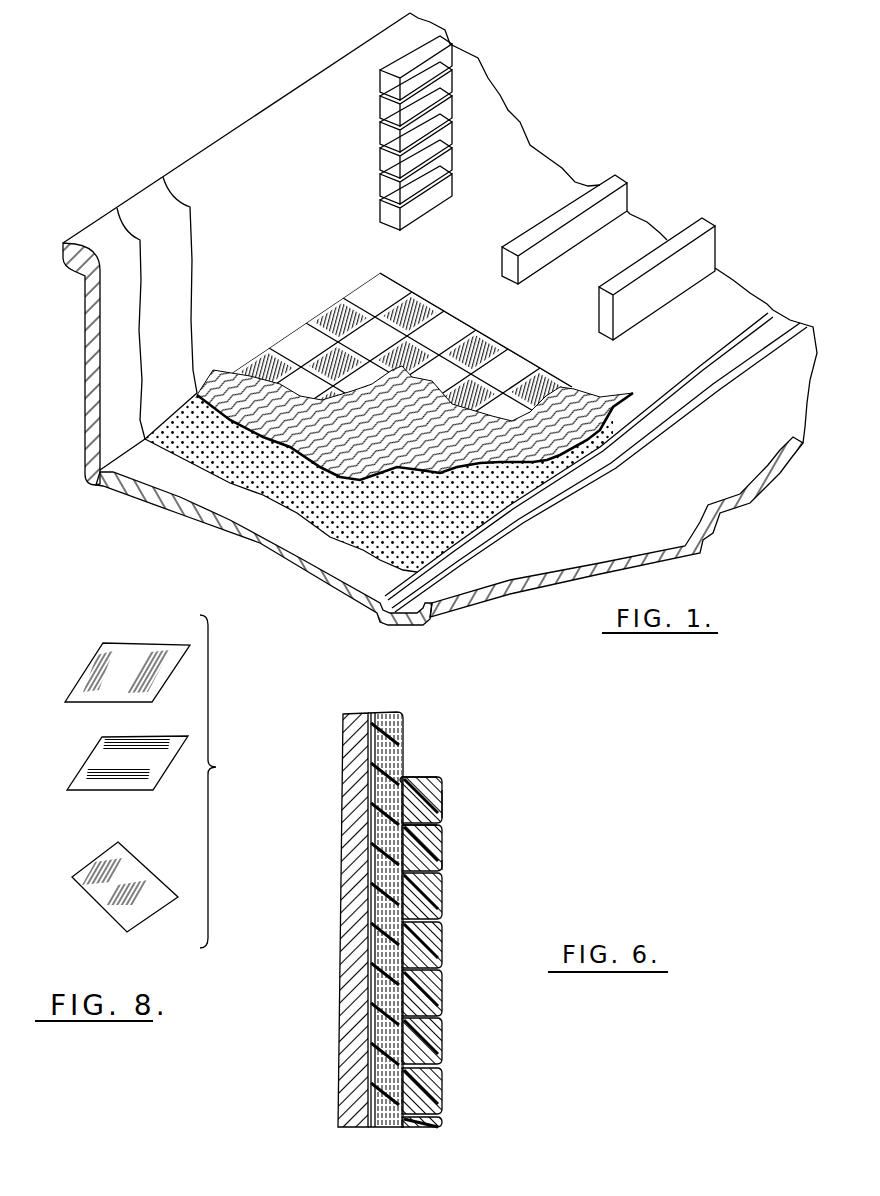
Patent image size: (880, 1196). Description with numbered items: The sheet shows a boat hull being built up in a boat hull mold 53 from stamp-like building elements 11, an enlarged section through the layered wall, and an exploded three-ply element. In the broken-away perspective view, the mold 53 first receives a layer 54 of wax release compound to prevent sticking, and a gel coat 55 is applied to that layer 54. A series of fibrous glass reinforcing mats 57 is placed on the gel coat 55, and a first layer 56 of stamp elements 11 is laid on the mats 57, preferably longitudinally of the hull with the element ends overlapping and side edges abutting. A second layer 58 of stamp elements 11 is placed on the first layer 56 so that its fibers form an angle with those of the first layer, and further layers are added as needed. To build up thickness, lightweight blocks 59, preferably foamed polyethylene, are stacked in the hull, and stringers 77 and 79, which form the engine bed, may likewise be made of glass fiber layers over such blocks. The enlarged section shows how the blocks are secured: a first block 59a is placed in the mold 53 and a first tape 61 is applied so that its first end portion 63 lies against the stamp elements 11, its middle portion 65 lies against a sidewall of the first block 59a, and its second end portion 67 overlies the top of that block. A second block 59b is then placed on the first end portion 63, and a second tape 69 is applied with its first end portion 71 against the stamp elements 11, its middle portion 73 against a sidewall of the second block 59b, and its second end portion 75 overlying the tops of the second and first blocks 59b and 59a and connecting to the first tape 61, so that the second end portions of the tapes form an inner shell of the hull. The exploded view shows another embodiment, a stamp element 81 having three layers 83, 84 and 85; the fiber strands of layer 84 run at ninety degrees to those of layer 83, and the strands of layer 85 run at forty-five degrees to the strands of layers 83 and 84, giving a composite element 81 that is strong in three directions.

In FIG. 1, the boat hull building element 11 is at (400, 390).
In FIG. 6, the boat hull building element 11 is at (382, 1007).
In FIG. 1, the boat hull mold 53 is at (148, 492).
In FIG. 6, the boat hull mold 53 is at (347, 735).
In FIG. 1, the layer of wax release compound 54 is at (257, 518).
In FIG. 6, the layer of wax release compound 54 is at (370, 803).
In FIG. 1, the gel coat 55 is at (377, 542).
In FIG. 6, the gel coat 55 is at (370, 842).
In FIG. 1, the first layer of stamp elements 56 is at (297, 343).
In FIG. 1, the fibrous glass reinforcing mats 57 is at (373, 480).
In FIG. 6, the fibrous glass reinforcing mats 57 is at (377, 893).
In FIG. 1, the second layer of stamp elements 58 is at (360, 293).
In FIG. 1, the blocks 59 is at (388, 158).
In FIG. 6, the blocks 59 is at (430, 992).
In FIG. 6, the first block 59a is at (443, 847).
In FIG. 6, the second block 59b is at (442, 787).
In FIG. 6, the first tape 61 is at (450, 868).
In FIG. 6, the first end portion of first tape 63 is at (404, 780).
In FIG. 6, the middle portion of first tape 65 is at (420, 812).
In FIG. 6, the second end portion of first tape 67 is at (443, 833).
In FIG. 6, the second tape 69 is at (450, 796).
In FIG. 6, the first end portion of second tape 71 is at (403, 715).
In FIG. 6, the middle portion of second tape 73 is at (423, 775).
In FIG. 6, the second end portion of second tape 75 is at (442, 808).
In FIG. 1, the stringer 77 is at (582, 232).
In FIG. 1, the stringer 79 is at (673, 277).
In FIG. 8, the stamp element 81 is at (226, 781).
In FIG. 8, the layer 83 is at (78, 682).
In FIG. 8, the layer 84 is at (83, 770).
In FIG. 8, the layer 85 is at (73, 878).